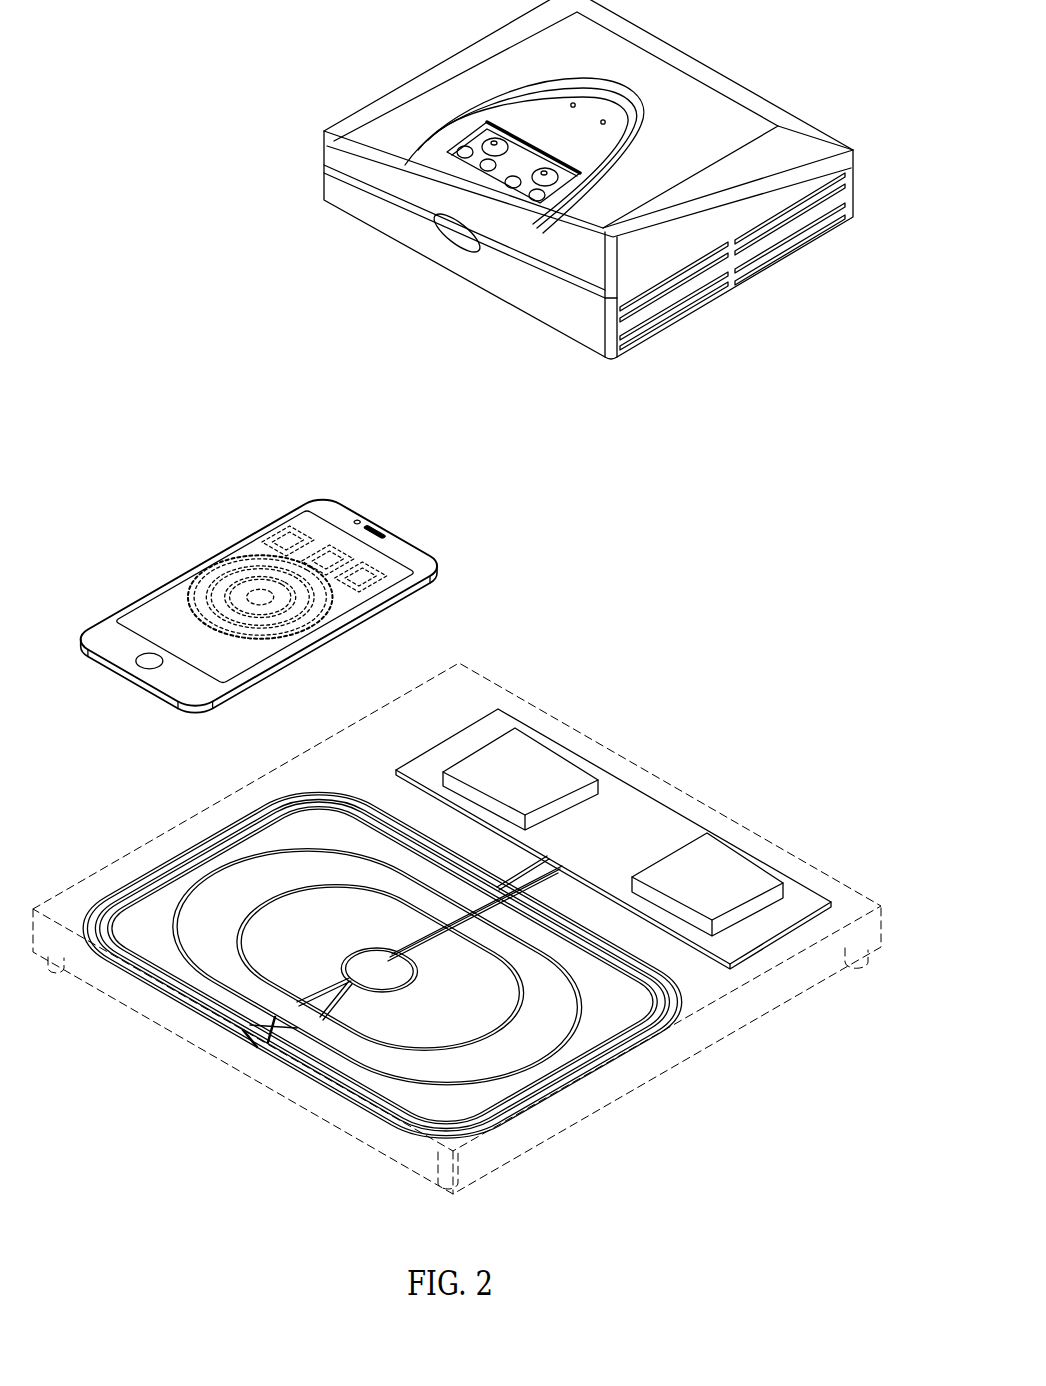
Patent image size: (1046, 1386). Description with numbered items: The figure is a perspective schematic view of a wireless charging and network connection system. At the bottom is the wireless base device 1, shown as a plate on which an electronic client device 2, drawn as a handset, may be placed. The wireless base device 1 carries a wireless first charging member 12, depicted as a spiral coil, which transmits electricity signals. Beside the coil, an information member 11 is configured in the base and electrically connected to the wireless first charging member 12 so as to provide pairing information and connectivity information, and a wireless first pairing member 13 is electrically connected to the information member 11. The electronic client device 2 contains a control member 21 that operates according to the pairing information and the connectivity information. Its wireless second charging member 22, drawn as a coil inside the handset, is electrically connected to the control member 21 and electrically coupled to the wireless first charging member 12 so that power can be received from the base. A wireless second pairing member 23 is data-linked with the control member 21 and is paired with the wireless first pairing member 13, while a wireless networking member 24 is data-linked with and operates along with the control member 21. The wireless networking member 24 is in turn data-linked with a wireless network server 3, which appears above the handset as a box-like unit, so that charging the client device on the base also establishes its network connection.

The wireless base device 1 is at (754, 816).
The information member 11 is at (731, 928).
The wireless first charging member 12 is at (170, 860).
The wireless first pairing member 13 is at (550, 748).
The electronic client device 2 is at (316, 484).
The control member 21 is at (327, 553).
The wireless second charging member 22 is at (203, 607).
The wireless second pairing member 23 is at (367, 577).
The wireless networking member 24 is at (283, 540).
The wireless network server 3 is at (387, 90).